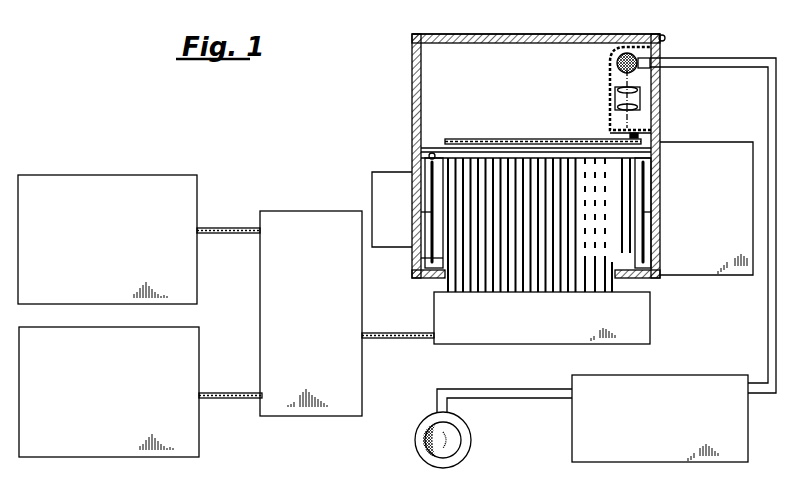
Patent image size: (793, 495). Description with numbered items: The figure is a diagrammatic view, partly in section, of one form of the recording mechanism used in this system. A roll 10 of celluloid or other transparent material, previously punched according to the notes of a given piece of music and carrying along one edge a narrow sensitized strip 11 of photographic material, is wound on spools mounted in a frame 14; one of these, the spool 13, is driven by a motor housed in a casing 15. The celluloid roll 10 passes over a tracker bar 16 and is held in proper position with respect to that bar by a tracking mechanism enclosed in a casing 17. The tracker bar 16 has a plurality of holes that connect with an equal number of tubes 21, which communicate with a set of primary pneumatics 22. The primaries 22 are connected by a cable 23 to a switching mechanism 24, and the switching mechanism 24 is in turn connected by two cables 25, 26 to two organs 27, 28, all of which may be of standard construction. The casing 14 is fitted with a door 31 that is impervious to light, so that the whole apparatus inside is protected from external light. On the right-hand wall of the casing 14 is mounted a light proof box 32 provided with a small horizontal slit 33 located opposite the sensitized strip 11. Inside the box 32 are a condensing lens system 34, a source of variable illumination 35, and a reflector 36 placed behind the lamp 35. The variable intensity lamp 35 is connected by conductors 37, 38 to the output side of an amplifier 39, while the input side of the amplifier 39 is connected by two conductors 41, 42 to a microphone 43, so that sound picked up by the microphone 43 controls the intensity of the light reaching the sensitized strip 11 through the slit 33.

The roll 10 is at (485, 139).
The sensitized strip 11 is at (640, 185).
The spool 13 is at (432, 250).
The frame 14 is at (412, 70).
The casing 15 is at (710, 145).
The tracker bar 16 is at (508, 152).
The casing 17 is at (395, 185).
The tubes 21 is at (442, 286).
The primary pneumatics 22 is at (650, 312).
The cable 23 is at (416, 338).
The switching mechanism 24 is at (318, 414).
The cable 25 is at (226, 222).
The cable 26 is at (225, 393).
The organ 27 is at (192, 200).
The organ 28 is at (192, 350).
The door 31 is at (585, 34).
The light proof box 32 is at (610, 73).
The slit 33 is at (612, 123).
The condensing lens system 34 is at (616, 97).
The source of variable illumination 35 is at (635, 52).
The reflector 36 is at (613, 54).
The conductor 37 is at (690, 58).
The conductor 38 is at (722, 67).
The amplifier 39 is at (706, 376).
The conductor 41 is at (490, 389).
The conductor 42 is at (542, 398).
The microphone 43 is at (418, 454).